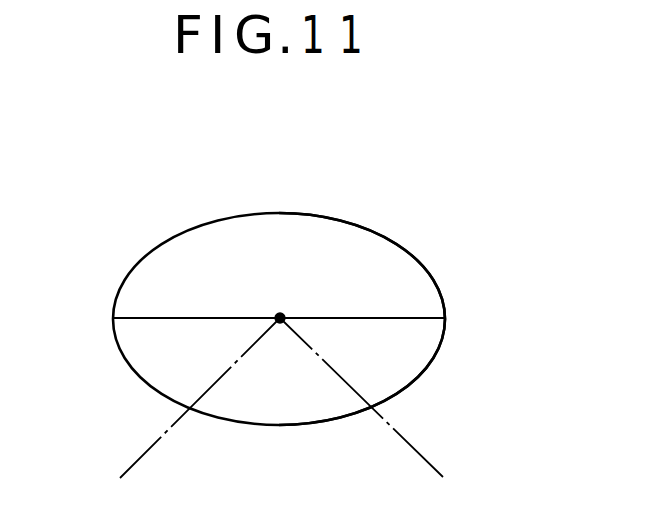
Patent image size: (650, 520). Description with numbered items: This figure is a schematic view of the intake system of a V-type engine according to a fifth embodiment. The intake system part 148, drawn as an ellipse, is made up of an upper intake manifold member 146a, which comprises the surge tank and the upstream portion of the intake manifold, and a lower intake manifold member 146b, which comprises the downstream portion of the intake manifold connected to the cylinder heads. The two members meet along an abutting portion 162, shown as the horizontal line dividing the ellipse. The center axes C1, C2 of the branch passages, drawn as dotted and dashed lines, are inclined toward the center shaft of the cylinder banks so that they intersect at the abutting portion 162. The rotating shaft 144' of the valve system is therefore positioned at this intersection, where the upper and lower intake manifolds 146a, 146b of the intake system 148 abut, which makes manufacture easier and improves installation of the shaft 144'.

The intake system part 148 is at (424, 164).
The upper intake manifold member 146a is at (435, 281).
The lower intake manifold member 146b is at (420, 376).
The abutting portion 162 is at (140, 320).
The rotating shaft of the valve system 144' is at (274, 234).
The center axis of branch passage C1 is at (420, 450).
The center axis of branch passage C2 is at (153, 447).